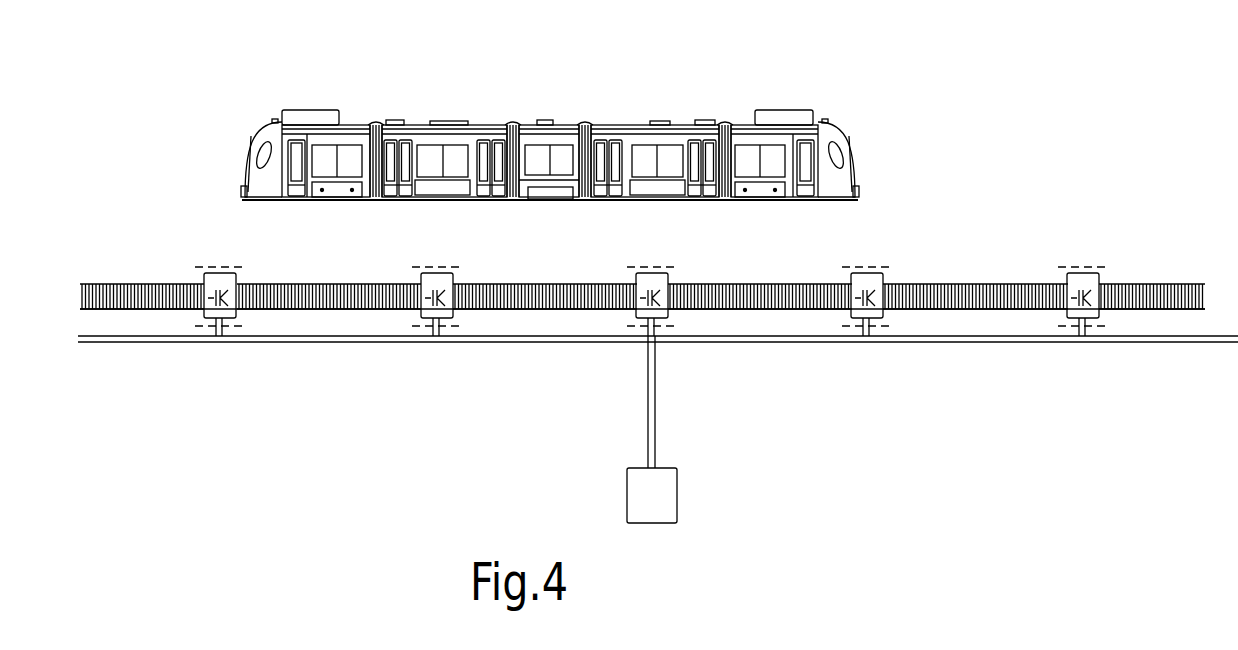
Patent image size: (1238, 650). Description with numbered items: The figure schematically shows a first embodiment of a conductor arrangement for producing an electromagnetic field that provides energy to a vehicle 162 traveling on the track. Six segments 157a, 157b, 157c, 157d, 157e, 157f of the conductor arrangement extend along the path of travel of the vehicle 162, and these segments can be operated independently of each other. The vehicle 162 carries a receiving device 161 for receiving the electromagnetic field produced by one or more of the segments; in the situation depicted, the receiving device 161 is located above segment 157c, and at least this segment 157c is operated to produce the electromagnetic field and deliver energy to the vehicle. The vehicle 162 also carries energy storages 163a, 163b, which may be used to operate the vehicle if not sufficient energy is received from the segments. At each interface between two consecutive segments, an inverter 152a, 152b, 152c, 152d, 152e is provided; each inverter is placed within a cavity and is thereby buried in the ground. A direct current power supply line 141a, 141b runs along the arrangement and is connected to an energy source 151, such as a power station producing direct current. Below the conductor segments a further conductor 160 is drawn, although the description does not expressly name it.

The DC power supply line 141a is at (692, 338).
The DC power supply line 141b is at (823, 344).
The energy source 151 is at (678, 494).
The inverter 152a is at (235, 317).
The inverter 152b is at (455, 318).
The inverter 152c is at (643, 311).
The inverter 152d is at (880, 269).
The inverter 152e is at (1087, 264).
The segment of conductor arrangement 157a is at (122, 283).
The segment of conductor arrangement 157b is at (325, 283).
The segment of conductor arrangement 157c is at (545, 283).
The segment of conductor arrangement 157d is at (763, 283).
The segment of conductor arrangement 157e is at (970, 283).
The segment of conductor arrangement 157f is at (1185, 283).
The loop return conductor 160 is at (924, 310).
The receiving device 161 is at (561, 188).
The vehicle 162 is at (827, 120).
The energy storage 163a is at (786, 108).
The energy storage 163b is at (310, 108).